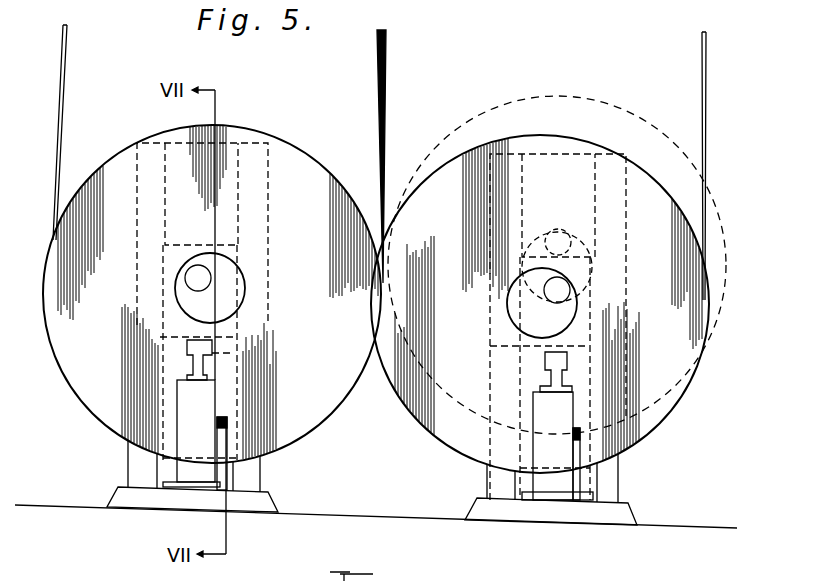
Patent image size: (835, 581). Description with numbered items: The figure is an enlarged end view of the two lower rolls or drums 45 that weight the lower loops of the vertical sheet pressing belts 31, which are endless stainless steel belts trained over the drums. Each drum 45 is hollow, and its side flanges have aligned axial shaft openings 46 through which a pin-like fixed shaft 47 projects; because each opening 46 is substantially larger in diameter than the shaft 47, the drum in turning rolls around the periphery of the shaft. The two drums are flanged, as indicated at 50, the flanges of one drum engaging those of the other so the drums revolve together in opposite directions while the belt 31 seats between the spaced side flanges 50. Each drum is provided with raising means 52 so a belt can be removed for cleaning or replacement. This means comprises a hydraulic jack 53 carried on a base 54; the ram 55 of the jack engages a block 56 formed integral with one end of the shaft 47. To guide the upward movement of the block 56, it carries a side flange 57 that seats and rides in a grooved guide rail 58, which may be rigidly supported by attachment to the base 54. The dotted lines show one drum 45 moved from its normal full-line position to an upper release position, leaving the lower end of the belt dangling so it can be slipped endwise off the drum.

The endless stainless steel belt 31 is at (387, 93).
The drum 45 is at (81, 352).
The axial shaft opening 46 is at (246, 305).
The fixed shaft 47 is at (198, 280).
The flange 50 is at (388, 384).
The means for raising the drum 52 is at (264, 477).
The hydraulic jack 53 is at (185, 473).
The base 54 is at (278, 508).
The ram 55 is at (240, 362).
The block 56 is at (160, 325).
The side flange 57 is at (225, 243).
The grooved guide rail 58 is at (272, 155).